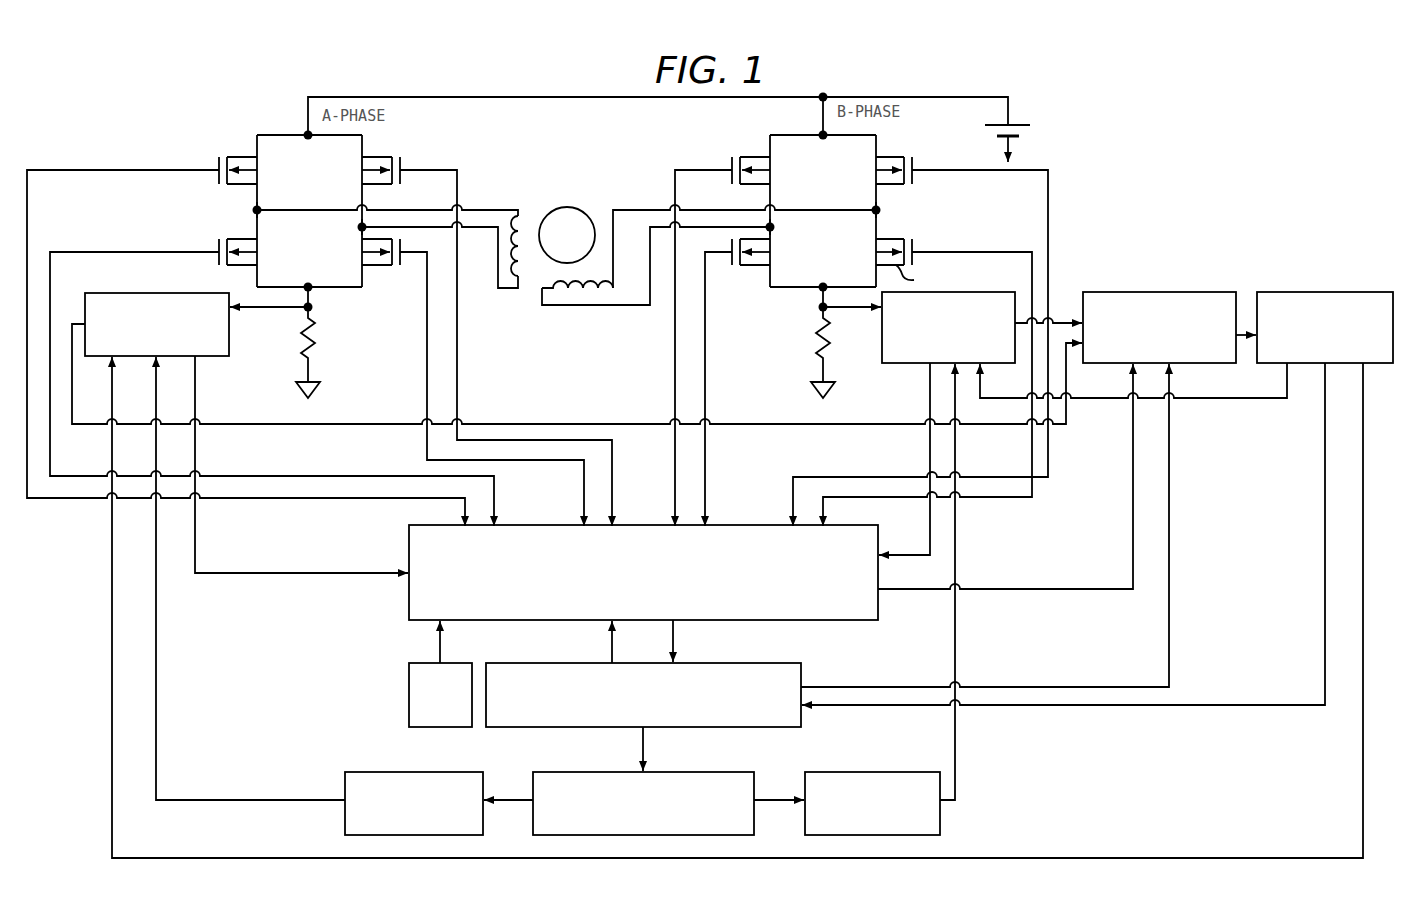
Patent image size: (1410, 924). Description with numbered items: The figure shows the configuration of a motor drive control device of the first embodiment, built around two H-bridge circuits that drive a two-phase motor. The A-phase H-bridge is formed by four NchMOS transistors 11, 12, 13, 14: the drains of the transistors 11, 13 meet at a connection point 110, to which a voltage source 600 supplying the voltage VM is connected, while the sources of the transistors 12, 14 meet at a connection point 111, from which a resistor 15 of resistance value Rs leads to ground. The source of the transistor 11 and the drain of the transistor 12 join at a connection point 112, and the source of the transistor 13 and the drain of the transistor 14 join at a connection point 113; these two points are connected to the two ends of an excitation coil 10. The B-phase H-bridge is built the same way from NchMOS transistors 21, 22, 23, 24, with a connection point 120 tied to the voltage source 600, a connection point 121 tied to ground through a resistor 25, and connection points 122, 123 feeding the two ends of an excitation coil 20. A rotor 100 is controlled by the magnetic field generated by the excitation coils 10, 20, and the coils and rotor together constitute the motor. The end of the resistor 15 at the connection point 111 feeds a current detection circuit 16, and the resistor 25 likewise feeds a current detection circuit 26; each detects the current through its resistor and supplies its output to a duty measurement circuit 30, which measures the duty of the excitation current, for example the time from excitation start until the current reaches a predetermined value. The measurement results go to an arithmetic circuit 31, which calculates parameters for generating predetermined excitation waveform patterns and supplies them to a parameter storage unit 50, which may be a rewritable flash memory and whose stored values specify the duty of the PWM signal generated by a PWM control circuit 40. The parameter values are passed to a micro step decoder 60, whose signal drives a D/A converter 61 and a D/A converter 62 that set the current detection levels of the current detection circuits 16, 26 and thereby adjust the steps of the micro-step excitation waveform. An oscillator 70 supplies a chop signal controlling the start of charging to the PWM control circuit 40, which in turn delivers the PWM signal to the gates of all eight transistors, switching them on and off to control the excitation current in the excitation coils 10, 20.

The excitation coil 10 is at (519, 216).
The excitation coil 20 is at (574, 300).
The rotor 100 is at (567, 207).
The NchMOS transistor 11 is at (241, 156).
The NchMOS transistor 12 is at (238, 265).
The NchMOS transistor 13 is at (388, 158).
The NchMOS transistor 14 is at (392, 266).
The NchMOS transistor 21 is at (751, 157).
The NchMOS transistor 22 is at (753, 267).
The NchMOS transistor 23 is at (894, 158).
The NchMOS transistor 24 is at (911, 265).
The connection point 110 is at (305, 131).
The connection point 111 is at (306, 285).
The connection point 112 is at (253, 210).
The connection point 113 is at (358, 227).
The connection point 120 is at (819, 134).
The connection point 121 is at (834, 285).
The connection point 122 is at (774, 228).
The connection point 123 is at (880, 211).
The resistor 15 is at (296, 336).
The resistor 25 is at (832, 338).
The current detection circuit 16 is at (96, 293).
The current detection circuit 26 is at (974, 292).
The duty measurement circuit 30 is at (1165, 292).
The arithmetic circuit 31 is at (1328, 292).
The PWM control circuit 40 is at (812, 621).
The parameter storage unit 50 is at (752, 663).
The micro step decoder 60 is at (703, 772).
The D/A converter 61 is at (440, 772).
The D/A converter 62 is at (883, 772).
The oscillator 70 is at (452, 663).
The voltage source 600 is at (1020, 128).